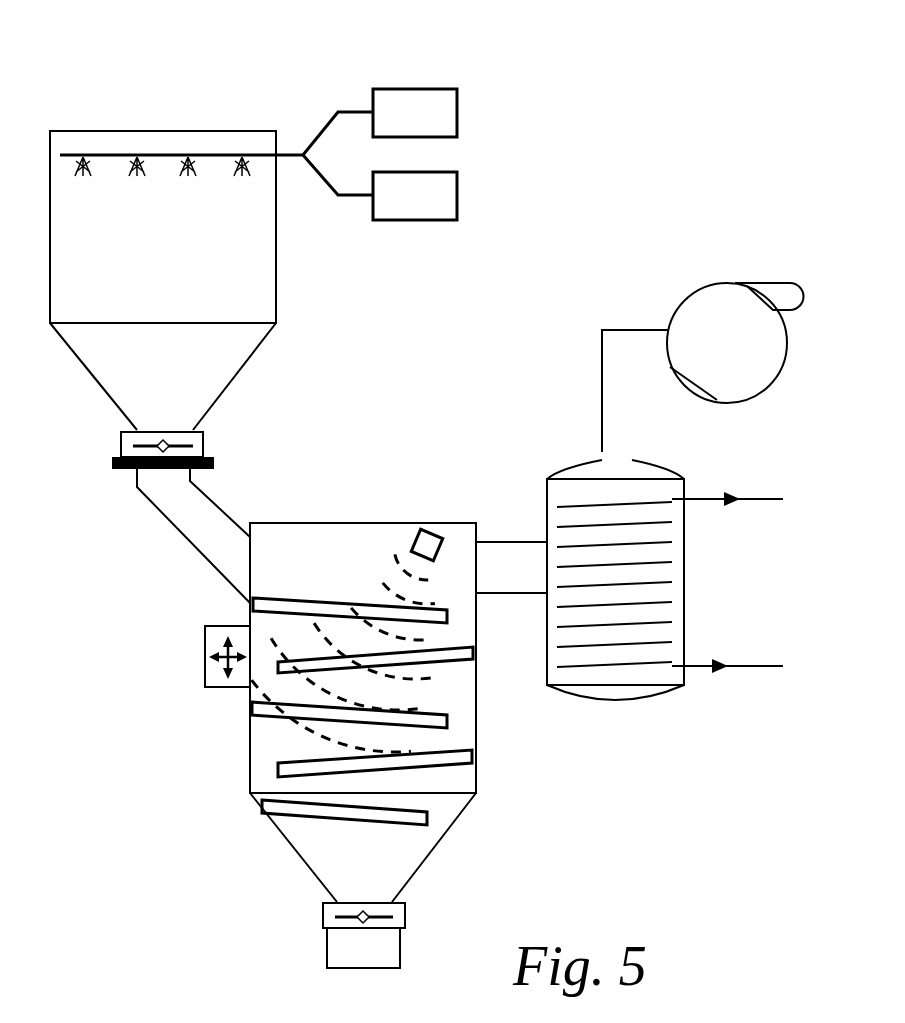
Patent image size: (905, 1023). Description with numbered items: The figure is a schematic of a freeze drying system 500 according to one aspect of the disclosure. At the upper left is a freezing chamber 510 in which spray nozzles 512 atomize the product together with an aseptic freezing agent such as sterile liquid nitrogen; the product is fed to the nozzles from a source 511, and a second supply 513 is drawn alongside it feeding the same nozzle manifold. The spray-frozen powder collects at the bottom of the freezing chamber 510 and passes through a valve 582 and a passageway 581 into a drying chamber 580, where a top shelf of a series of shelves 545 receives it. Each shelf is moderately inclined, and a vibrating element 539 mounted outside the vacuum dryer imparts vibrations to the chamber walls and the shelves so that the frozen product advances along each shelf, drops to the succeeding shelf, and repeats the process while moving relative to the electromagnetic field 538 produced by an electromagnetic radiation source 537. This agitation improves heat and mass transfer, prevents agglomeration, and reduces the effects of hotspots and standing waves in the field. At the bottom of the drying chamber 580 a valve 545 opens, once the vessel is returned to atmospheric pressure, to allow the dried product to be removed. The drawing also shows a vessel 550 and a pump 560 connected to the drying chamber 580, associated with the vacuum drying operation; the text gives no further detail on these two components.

The freeze drying system 500 is at (587, 76).
The freezing chamber 510 is at (176, 130).
The source 511 is at (412, 87).
The spray nozzles 512 is at (160, 152).
The second supply 513 is at (413, 222).
The electromagnetic radiation source 537 is at (433, 528).
The electromagnetic field 538 is at (420, 745).
The vibrating element 539 is at (225, 628).
The shelves 545 is at (303, 598).
The condenser 550 is at (572, 465).
The pump 560 is at (717, 285).
The drying chamber 580 is at (457, 822).
The passageway 581 is at (222, 517).
The valve 582 is at (204, 447).